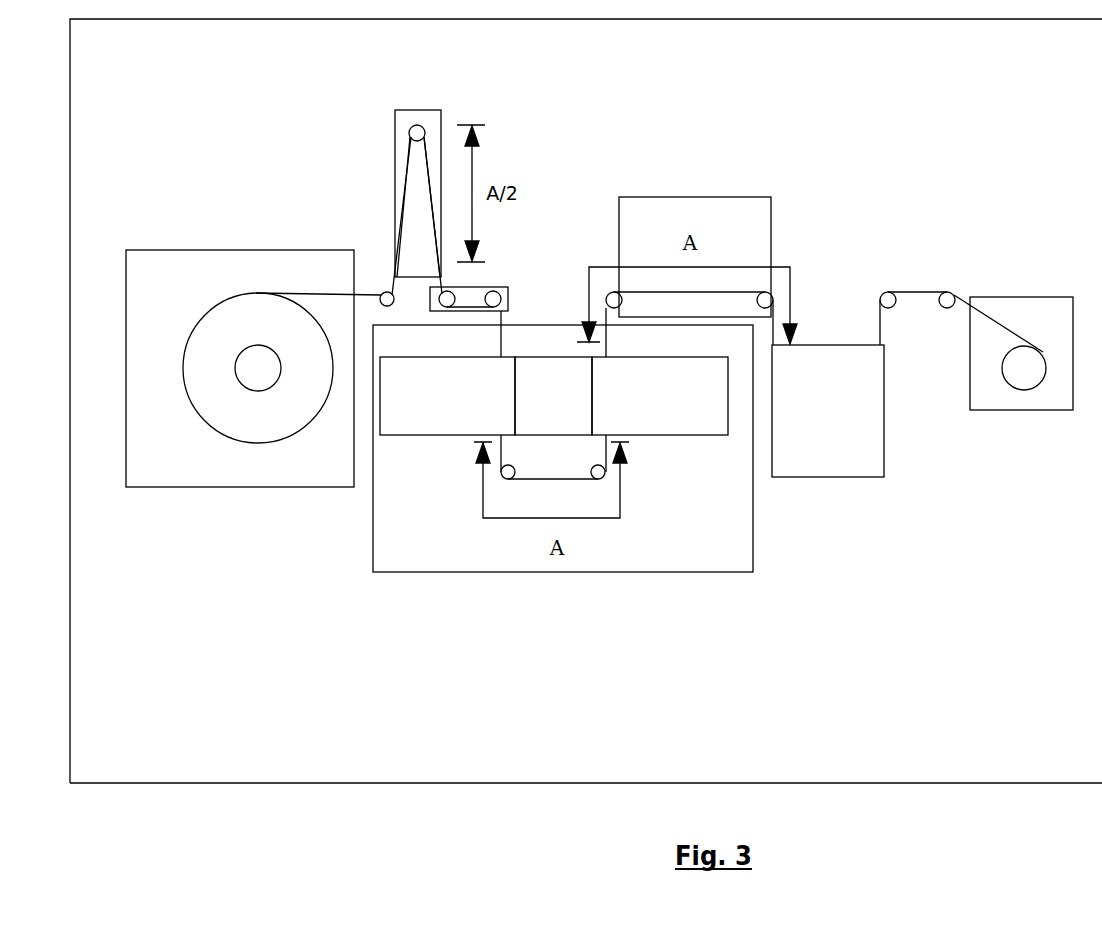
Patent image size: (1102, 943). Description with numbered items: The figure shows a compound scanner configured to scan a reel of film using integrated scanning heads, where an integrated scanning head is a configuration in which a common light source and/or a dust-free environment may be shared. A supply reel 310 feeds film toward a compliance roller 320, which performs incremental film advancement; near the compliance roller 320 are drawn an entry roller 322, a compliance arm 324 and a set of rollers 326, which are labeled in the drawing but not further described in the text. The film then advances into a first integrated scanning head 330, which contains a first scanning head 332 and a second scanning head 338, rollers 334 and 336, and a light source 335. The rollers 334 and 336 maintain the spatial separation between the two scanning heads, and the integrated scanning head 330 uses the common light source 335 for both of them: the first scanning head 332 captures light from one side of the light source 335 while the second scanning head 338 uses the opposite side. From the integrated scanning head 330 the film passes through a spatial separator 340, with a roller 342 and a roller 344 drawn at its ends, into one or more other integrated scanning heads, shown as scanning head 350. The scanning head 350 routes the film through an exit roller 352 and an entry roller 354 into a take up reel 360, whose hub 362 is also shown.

The supply reel 310 is at (328, 487).
The compliance roller 320 is at (440, 110).
The entry roller 322 is at (385, 292).
The compliance arm 324 is at (409, 134).
The rollers 326 is at (507, 287).
The first integrated scanning head 330 is at (695, 572).
The first scanning head 332 is at (410, 435).
The roller 334 is at (512, 478).
The light source 335 is at (543, 428).
The roller 336 is at (602, 478).
The second scanning head 338 is at (660, 435).
The spatial separator 340 is at (685, 197).
The roller 342 is at (620, 295).
The roller 344 is at (773, 293).
The scanning head 350 is at (879, 393).
The exit roller 352 is at (889, 292).
The entry roller 354 is at (952, 293).
The take up reel 360 is at (1073, 390).
The take up reel hub 362 is at (1043, 357).